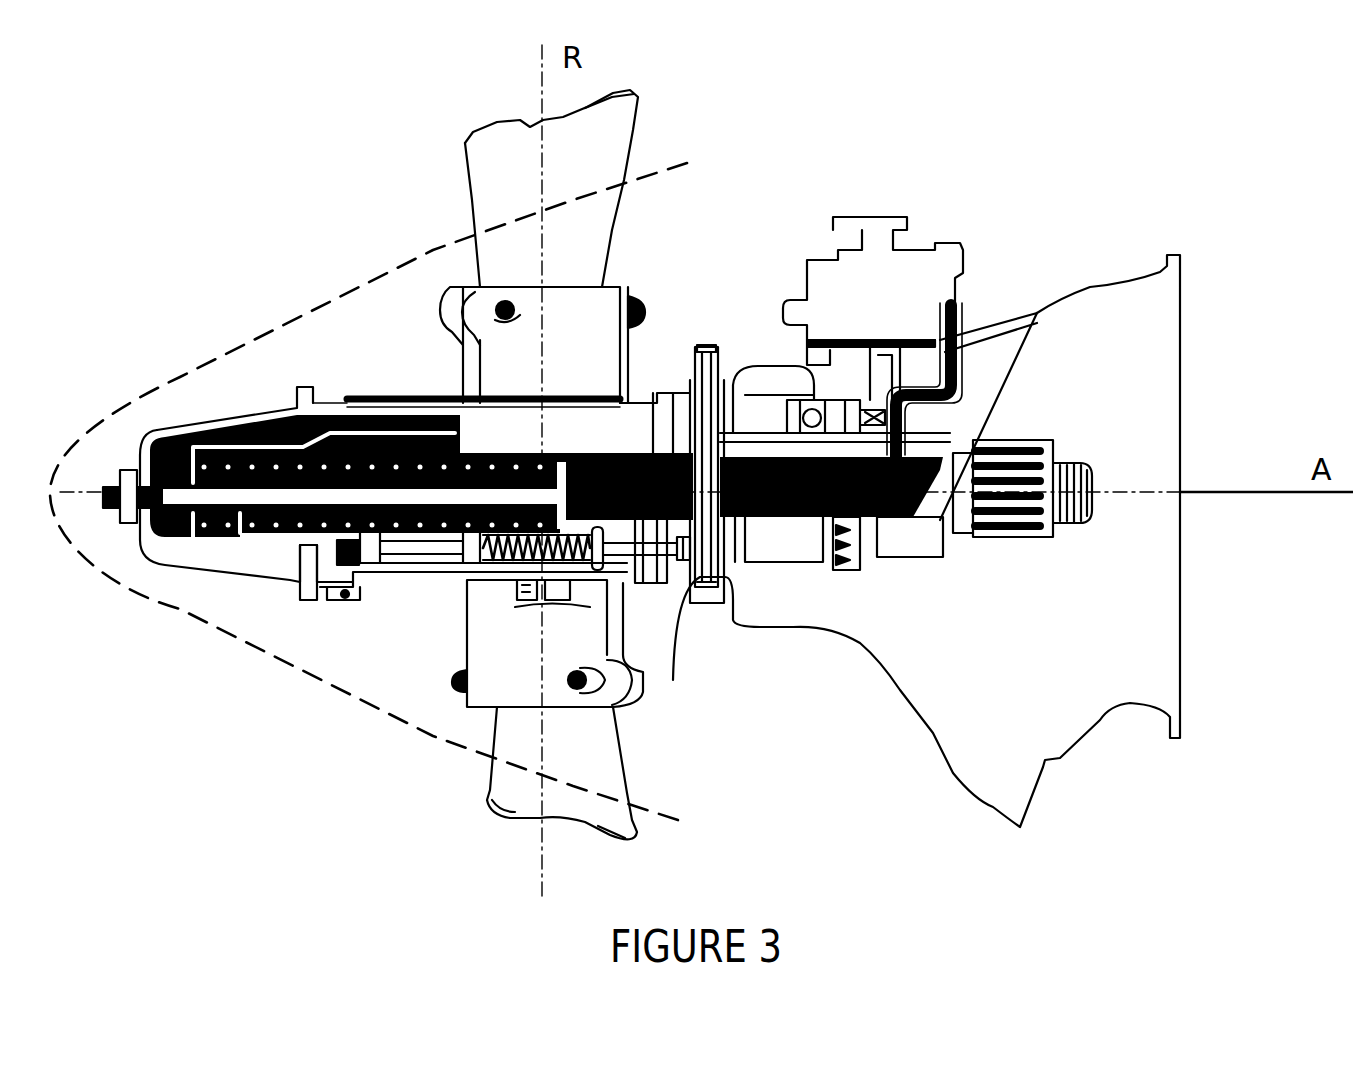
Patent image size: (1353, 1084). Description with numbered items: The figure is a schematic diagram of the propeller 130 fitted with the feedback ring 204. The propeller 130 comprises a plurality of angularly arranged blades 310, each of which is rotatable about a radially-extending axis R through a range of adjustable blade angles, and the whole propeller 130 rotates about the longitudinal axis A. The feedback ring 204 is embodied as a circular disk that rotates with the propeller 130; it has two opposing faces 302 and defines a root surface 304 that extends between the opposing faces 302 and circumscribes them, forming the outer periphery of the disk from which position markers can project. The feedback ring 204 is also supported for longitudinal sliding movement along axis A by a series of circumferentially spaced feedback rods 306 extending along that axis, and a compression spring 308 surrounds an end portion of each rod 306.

The propeller 130 is at (228, 250).
The blades 310 is at (466, 137).
The root surface 304 is at (708, 435).
The feedback ring 204 is at (705, 350).
The opposing faces 302 is at (740, 556).
The feedback rods 306 is at (623, 547).
The compression spring 308 is at (477, 563).